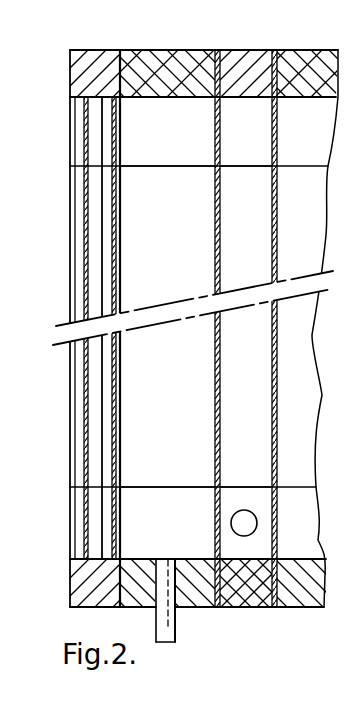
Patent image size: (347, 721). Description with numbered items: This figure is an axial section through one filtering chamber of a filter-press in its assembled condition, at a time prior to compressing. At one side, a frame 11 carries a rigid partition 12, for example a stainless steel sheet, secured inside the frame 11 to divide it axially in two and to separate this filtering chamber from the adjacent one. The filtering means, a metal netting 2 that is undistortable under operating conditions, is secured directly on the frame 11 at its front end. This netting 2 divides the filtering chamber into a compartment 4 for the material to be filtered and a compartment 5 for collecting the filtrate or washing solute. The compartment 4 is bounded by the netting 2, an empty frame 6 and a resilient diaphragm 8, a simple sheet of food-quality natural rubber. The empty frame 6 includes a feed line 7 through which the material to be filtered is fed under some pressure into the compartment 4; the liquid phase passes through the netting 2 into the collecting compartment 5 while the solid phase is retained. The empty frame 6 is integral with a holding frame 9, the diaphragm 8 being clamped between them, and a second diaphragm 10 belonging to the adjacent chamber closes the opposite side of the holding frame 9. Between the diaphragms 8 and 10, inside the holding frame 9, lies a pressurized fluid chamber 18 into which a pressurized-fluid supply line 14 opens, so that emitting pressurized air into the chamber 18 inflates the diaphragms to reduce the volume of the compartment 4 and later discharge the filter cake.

The metal netting 2 is at (133, 92).
The compartment for material to be filtered 4 is at (178, 243).
The compartment for collecting the filtrate 5 is at (107, 192).
The empty frame 6 is at (175, 85).
The feed line 7 is at (165, 629).
The resilient diaphragm 8 is at (218, 77).
The holding frame 9 is at (248, 72).
The second diaphragm 10 is at (293, 63).
The frame 11 is at (97, 72).
The partition 12 is at (98, 149).
The pressurized-fluid supply line 14 is at (252, 535).
The pressurized fluid chamber 18 is at (256, 243).